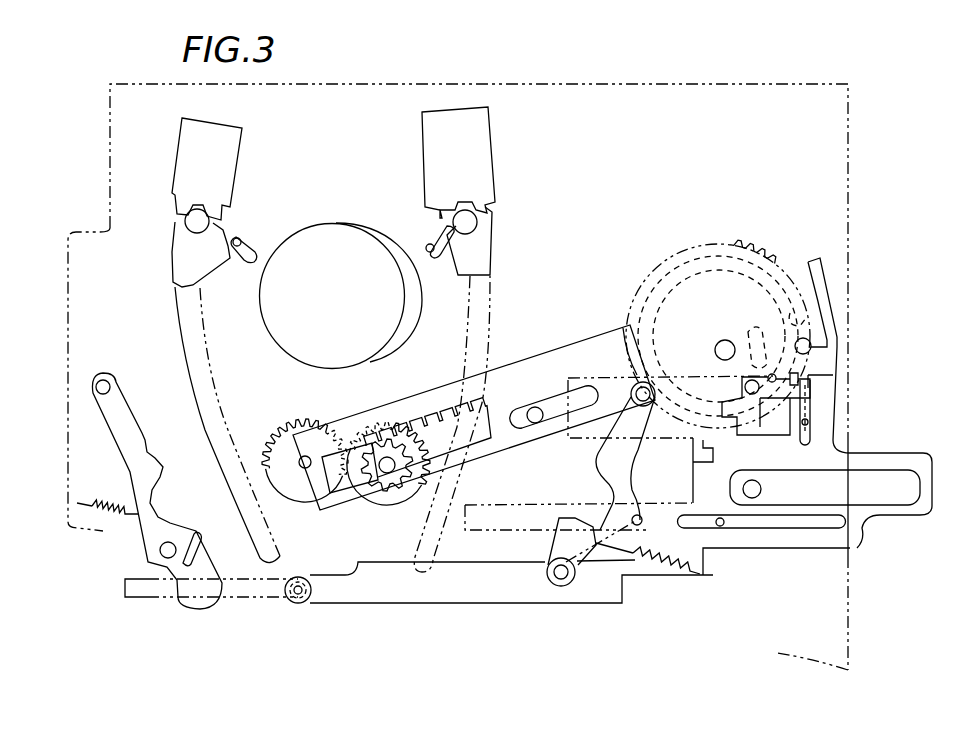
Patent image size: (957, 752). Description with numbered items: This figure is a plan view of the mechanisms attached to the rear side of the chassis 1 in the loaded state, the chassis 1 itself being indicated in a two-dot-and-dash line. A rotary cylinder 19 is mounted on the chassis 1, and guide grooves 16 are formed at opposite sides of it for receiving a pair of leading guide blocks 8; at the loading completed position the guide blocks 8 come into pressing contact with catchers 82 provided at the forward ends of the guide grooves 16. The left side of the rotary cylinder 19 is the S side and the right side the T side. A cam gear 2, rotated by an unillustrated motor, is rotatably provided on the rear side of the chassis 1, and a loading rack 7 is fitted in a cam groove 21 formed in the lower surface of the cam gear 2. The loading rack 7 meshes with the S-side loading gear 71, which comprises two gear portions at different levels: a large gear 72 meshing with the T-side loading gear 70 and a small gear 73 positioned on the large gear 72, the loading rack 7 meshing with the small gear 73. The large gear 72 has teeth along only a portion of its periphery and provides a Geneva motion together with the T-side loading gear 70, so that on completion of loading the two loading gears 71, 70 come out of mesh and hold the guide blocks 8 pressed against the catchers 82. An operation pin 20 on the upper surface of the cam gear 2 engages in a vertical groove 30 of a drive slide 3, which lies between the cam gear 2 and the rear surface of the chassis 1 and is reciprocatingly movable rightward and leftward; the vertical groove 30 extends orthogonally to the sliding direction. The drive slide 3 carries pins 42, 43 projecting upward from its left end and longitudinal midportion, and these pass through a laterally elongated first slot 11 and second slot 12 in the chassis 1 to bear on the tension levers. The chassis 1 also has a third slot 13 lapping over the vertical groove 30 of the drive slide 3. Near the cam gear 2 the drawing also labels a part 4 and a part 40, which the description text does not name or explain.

The chassis 1 is at (826, 132).
The cam gear 2 is at (760, 243).
The drive slide 3 is at (866, 538).
The pawl 4 is at (758, 430).
The loading rack 7 is at (572, 355).
The leading guide block 8 is at (172, 253).
The first slot 11 is at (257, 600).
The second slot 12 is at (513, 505).
The third slot 13 is at (600, 435).
The guide groove 16 is at (200, 313).
The rotary cylinder 19 is at (317, 237).
The operation pin 20 is at (810, 343).
The cam groove 21 is at (690, 260).
The vertical groove 30 is at (807, 423).
The latch bar 40 is at (778, 370).
The pin 42 is at (300, 602).
The pin 43 is at (600, 543).
The T-side loading gear 70 is at (272, 425).
The S-side loading gear 71 is at (360, 298).
The large gear 72 is at (367, 423).
The small gear 73 is at (387, 437).
The catcher 82 is at (223, 158).